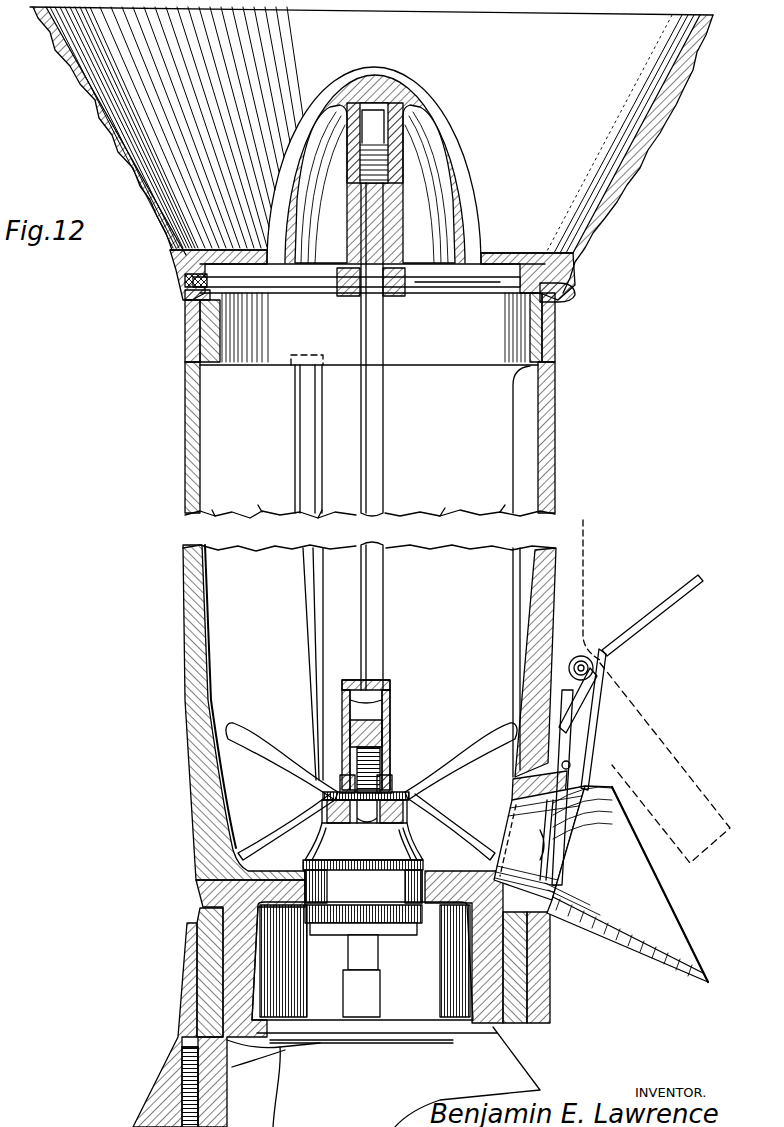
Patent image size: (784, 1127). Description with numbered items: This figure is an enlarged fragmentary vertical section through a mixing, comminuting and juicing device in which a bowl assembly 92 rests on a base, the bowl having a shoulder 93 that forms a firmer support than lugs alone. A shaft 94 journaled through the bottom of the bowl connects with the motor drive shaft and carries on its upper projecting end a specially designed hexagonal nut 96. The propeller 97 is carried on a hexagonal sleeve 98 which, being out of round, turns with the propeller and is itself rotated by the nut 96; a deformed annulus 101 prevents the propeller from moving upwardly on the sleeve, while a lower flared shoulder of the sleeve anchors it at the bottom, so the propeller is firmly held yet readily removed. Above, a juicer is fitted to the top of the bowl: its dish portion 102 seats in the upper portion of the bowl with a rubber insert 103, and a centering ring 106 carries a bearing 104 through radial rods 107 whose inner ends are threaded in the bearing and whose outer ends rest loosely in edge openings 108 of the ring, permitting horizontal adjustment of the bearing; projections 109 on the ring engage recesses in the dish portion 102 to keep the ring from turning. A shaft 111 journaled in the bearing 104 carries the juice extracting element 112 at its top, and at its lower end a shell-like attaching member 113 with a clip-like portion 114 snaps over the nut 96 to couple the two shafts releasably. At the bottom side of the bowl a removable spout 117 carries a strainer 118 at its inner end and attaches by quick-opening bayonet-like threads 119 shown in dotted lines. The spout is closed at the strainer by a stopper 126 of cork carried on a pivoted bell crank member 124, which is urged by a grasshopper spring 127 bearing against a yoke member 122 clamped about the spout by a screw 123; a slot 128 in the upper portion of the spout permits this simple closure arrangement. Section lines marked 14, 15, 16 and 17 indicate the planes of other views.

The dish portion 102 is at (656, 127).
The juice extracting element 112 is at (435, 119).
The centering ring 106 is at (573, 270).
The projections 109 is at (566, 292).
The radial rods 107 is at (321, 288).
The bearing 104 is at (397, 296).
The edge openings 108 is at (186, 286).
The rubber insert 103 is at (565, 312).
The bowl assembly 92 is at (180, 550).
The shaft 111 is at (369, 461).
The hexagonal nut 96 is at (350, 697).
The attaching member 113 is at (380, 686).
The clip-like portion 114 is at (392, 723).
The hexagonal sleeve 98 is at (384, 760).
The deformed annulus 101 is at (323, 794).
The shaft 94 is at (367, 818).
The propeller 97 is at (238, 738).
The section line 16 is at (334, 762).
The section line 17 is at (272, 795).
The shoulder 93 is at (200, 908).
The section line 14 is at (565, 552).
The section line 15 is at (559, 752).
The strainer 118 is at (510, 813).
The threads 119 is at (565, 850).
The stopper 126 is at (560, 867).
The spout 117 is at (647, 957).
The slot 128 is at (618, 794).
The bell crank member 124 is at (657, 617).
The grasshopper spring 127 is at (600, 655).
The yoke member 122 is at (587, 707).
The screw 123 is at (573, 773).